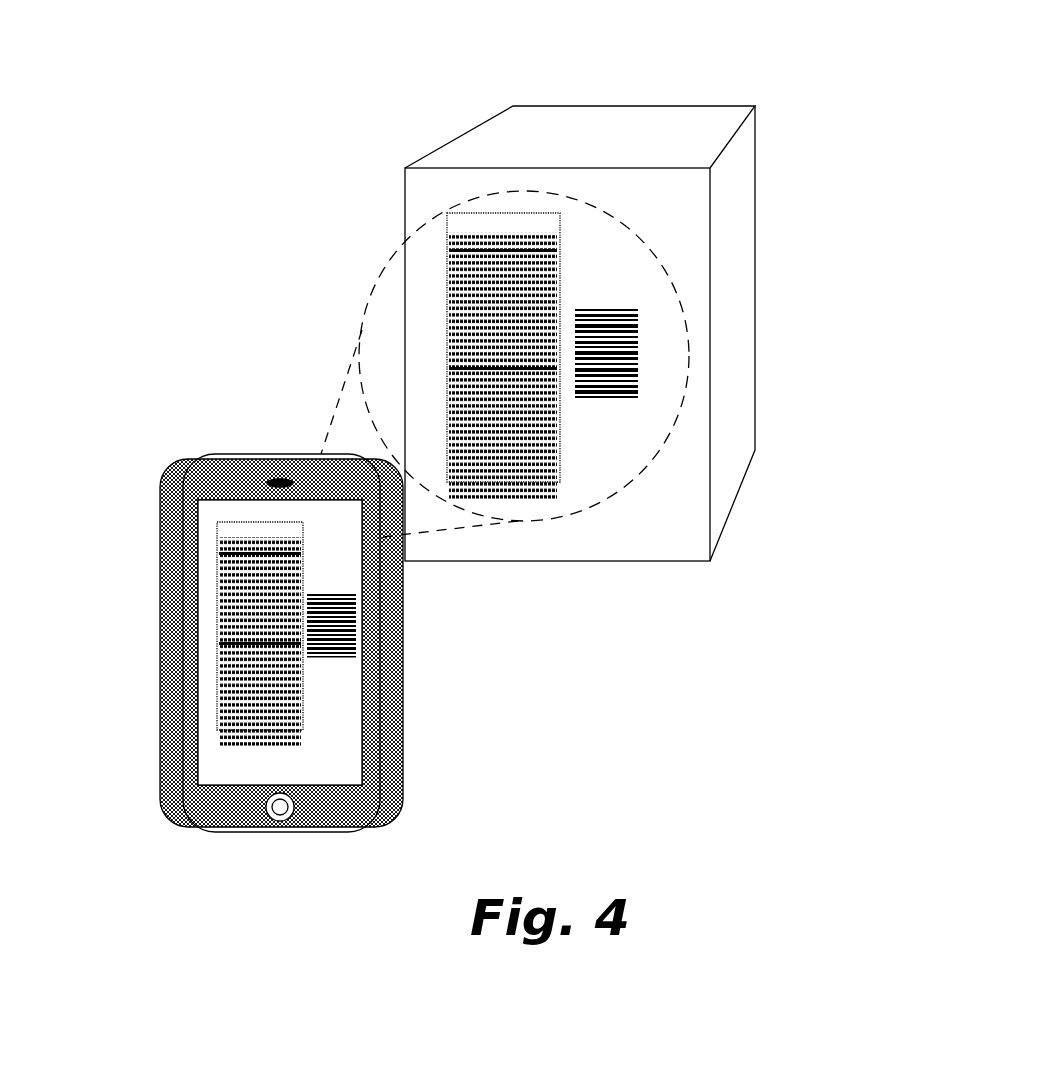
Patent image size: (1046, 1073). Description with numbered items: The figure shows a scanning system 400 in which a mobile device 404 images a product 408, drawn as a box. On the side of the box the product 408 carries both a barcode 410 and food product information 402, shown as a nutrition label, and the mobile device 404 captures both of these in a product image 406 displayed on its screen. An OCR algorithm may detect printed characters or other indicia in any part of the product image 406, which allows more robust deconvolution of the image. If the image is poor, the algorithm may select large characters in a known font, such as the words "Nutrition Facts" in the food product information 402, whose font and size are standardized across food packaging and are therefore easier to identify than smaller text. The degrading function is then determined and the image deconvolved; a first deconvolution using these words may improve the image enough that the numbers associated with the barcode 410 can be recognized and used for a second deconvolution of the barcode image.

The scanning system 400 is at (148, 120).
The food product information 402 is at (450, 255).
The mobile device 404 is at (183, 553).
The product image 406 is at (215, 670).
The product 408 is at (748, 166).
The barcode 410 is at (658, 347).